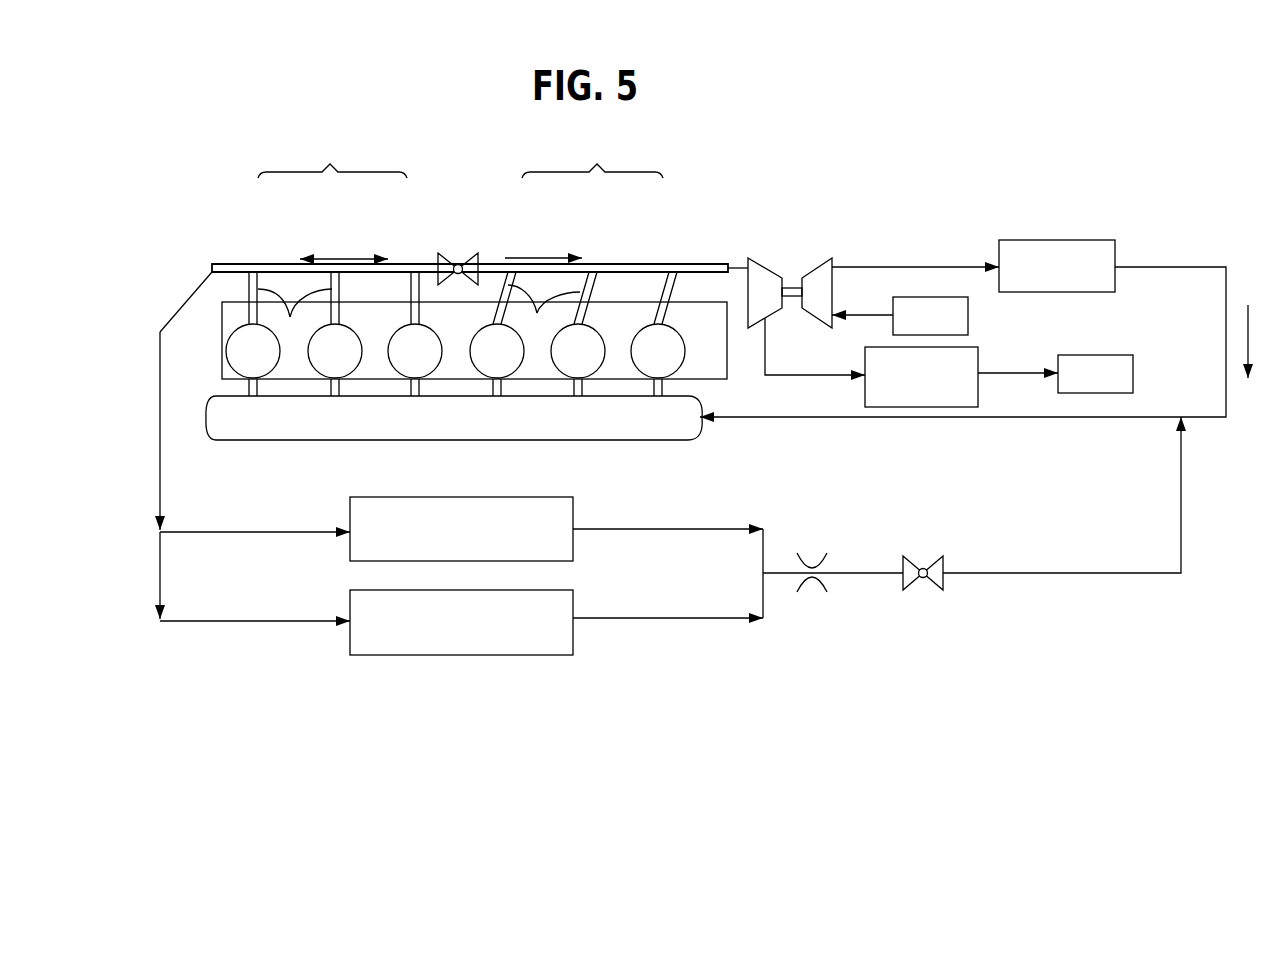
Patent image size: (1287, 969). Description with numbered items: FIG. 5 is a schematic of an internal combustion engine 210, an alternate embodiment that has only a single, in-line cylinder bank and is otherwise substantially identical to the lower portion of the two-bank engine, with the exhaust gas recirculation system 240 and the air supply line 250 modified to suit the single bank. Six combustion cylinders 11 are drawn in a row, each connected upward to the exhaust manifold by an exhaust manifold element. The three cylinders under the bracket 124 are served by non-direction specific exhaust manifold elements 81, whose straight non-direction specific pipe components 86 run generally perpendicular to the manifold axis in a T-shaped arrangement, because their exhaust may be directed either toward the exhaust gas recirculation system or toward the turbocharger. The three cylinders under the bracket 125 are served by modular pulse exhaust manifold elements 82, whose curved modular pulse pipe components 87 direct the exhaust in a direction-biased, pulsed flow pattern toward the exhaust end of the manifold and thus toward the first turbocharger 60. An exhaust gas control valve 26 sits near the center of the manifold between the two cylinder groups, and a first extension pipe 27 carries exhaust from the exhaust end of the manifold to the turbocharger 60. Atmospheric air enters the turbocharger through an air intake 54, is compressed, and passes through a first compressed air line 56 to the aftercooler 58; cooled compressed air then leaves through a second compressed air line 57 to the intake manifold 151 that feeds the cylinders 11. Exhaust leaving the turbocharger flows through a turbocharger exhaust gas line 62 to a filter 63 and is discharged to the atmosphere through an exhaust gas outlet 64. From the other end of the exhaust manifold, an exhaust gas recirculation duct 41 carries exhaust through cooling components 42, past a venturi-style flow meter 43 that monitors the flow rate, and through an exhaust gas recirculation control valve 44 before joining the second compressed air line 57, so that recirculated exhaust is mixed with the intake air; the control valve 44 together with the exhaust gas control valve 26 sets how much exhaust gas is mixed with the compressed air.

The combustion cylinders 11 is at (474, 349).
The exhaust gas control valve 26 is at (456, 252).
The first extension pipe 27 is at (736, 268).
The exhaust gas recirculation duct 41 is at (160, 452).
The cooling components 42 is at (626, 576).
The flow meter 43 is at (812, 582).
The exhaust gas recirculation control valve 44 is at (908, 584).
The second air intake 54 is at (900, 316).
The first compressed air line 56 is at (880, 267).
The second compressed air line 57 is at (1170, 265).
The aftercooler 58 is at (1057, 266).
The first turbocharger 60 is at (780, 279).
The turbocharger exhaust gas line 62 is at (787, 375).
The filter 63 is at (961, 377).
The exhaust gas outlet 64 is at (1095, 374).
The non-direction specific exhaust manifold element 81 is at (407, 258).
The modular pulse exhaust manifold element 82 is at (672, 260).
The non-direction specific pipe component 86 is at (295, 314).
The modular pulse pipe component 87 is at (544, 310).
The first cylinder bank 124 is at (332, 159).
The second cylinder bank 125 is at (592, 159).
The first intake manifold 151 is at (668, 425).
The internal combustion engine 210 is at (207, 229).
The exhaust gas recirculation system 240 is at (143, 570).
The air supply line 250 is at (1200, 433).